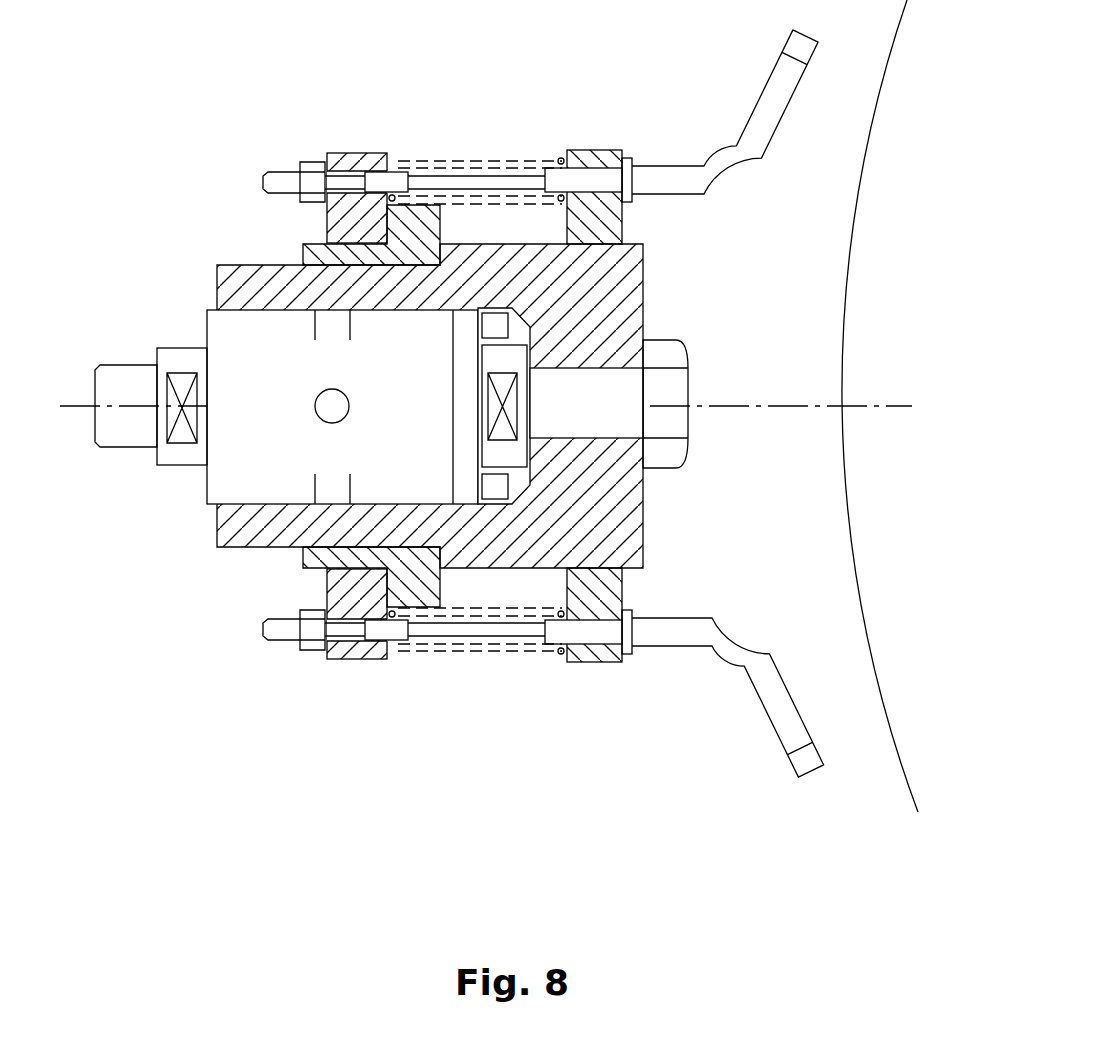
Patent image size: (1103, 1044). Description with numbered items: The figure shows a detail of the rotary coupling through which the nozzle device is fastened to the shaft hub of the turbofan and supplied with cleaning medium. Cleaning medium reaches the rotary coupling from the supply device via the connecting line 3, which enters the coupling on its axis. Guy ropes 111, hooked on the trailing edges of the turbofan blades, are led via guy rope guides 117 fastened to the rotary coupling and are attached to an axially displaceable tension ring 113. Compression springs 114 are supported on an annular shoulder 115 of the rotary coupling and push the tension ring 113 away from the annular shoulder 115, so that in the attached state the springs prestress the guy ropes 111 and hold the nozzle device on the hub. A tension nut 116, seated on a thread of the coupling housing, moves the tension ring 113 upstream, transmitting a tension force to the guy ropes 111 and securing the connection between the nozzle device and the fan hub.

The connecting line 3 is at (128, 428).
The guy ropes 111 is at (445, 182).
The tension ring 113 is at (357, 160).
The compression springs 114 is at (503, 162).
The annular shoulder 115 is at (603, 650).
The tension nut 116 is at (330, 560).
The guy rope guides 117 is at (775, 106).